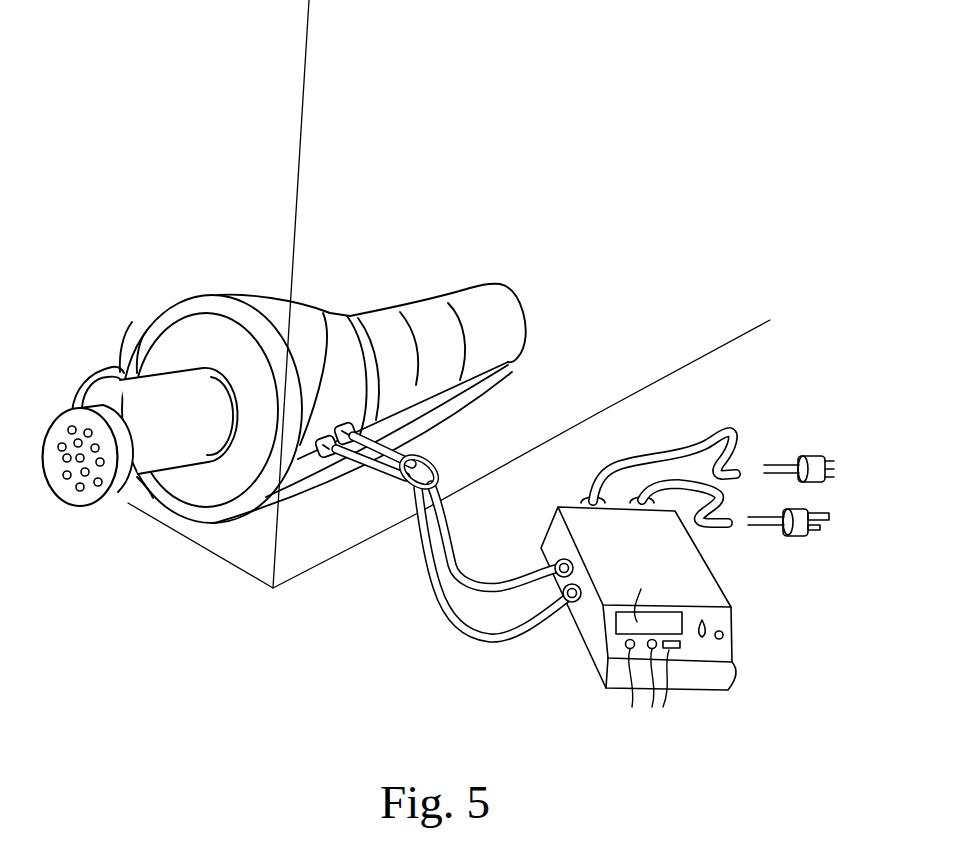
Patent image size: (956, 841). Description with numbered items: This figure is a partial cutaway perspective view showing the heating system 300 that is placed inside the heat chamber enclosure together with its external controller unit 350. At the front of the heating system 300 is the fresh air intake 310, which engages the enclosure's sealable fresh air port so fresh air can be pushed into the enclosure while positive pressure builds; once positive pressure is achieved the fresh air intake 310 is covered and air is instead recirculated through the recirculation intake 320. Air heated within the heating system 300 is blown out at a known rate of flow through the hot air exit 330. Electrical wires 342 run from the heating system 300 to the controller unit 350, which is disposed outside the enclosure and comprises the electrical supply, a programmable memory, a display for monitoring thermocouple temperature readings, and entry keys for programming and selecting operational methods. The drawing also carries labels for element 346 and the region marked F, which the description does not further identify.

The heating system 300 is at (366, 240).
The fresh air intake 310 is at (120, 493).
The recirculation intake 320 is at (76, 383).
The hot air exit 330 is at (522, 349).
The electrical wires 342 is at (450, 590).
The cable clips 346 is at (342, 426).
The controller unit 350 is at (718, 578).
The flange surface F is at (492, 432).